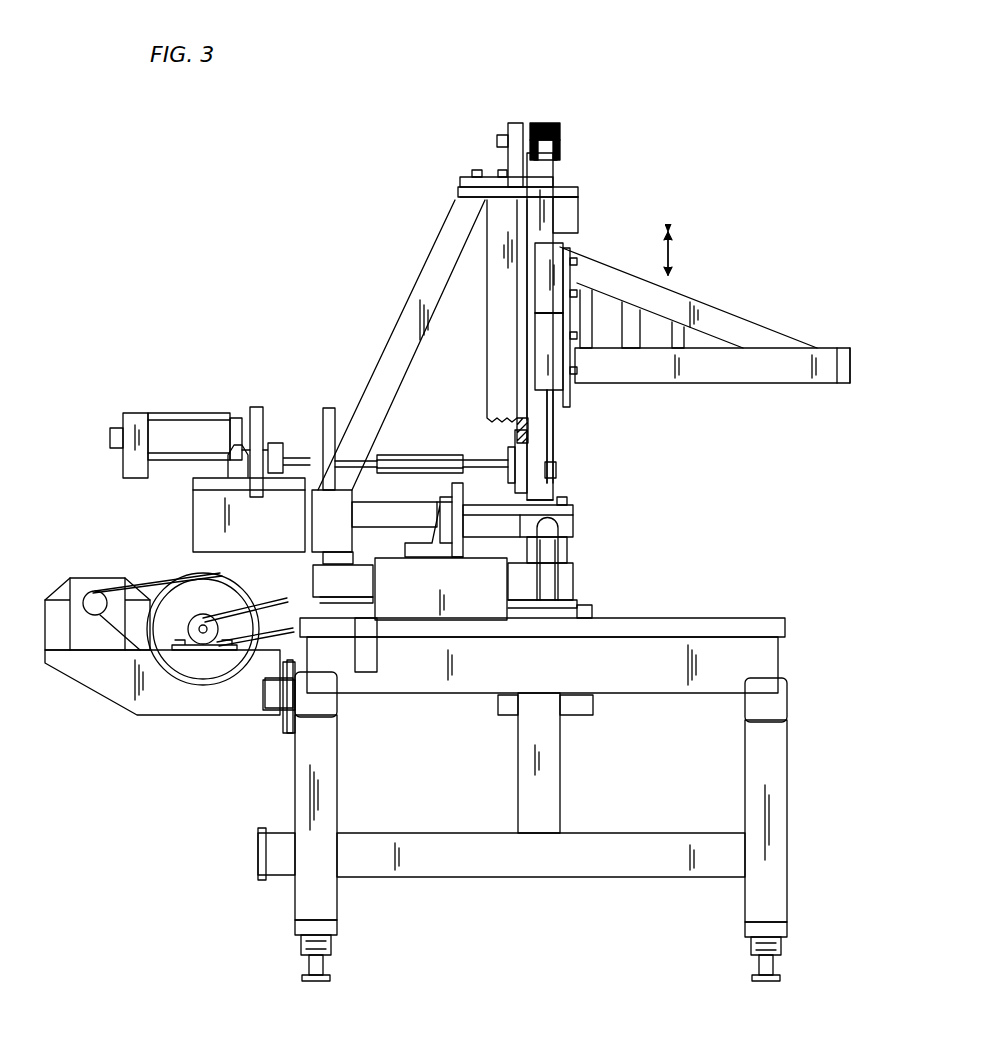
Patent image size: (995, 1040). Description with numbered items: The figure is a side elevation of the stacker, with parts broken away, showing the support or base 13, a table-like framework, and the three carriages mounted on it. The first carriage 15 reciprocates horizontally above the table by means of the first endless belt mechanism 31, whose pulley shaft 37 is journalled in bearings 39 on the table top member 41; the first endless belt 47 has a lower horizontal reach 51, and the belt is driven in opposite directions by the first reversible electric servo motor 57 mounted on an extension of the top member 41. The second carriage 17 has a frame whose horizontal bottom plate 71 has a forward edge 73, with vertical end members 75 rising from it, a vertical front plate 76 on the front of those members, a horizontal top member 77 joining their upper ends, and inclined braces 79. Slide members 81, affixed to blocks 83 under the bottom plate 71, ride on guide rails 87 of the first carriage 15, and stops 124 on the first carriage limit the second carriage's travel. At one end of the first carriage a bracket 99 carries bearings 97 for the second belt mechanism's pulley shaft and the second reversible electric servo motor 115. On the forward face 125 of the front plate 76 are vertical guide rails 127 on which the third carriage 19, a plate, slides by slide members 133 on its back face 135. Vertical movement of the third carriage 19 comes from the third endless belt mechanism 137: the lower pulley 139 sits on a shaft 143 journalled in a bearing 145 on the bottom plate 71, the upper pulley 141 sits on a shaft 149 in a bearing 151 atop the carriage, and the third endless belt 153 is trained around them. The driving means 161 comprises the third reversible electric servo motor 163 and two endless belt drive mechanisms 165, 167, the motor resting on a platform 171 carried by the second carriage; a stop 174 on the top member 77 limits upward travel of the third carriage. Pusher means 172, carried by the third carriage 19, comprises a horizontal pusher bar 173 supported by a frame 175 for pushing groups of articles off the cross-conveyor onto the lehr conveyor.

The support or base 13 is at (826, 790).
The first carriage 15 is at (578, 590).
The second carriage 17 is at (588, 178).
The third carriage 19 is at (578, 400).
The first endless belt mechanism 31 is at (100, 576).
The shaft 37 is at (202, 633).
The bearings 39 is at (227, 650).
The top member 41 is at (102, 700).
The first endless belt 47 is at (260, 603).
The lower horizontal reach 51 is at (90, 600).
The first reversible electric servo motor 57 is at (95, 632).
The bottom plate 71 is at (543, 502).
The forward edge 73 is at (575, 510).
The vertical end members 75 is at (490, 382).
The vertical front plate 76 is at (517, 432).
The top member 77 is at (590, 197).
The inclined braces 79 is at (437, 262).
The slide members 81 is at (313, 537).
The blocks 83 is at (573, 545).
The guide rails 87 is at (337, 560).
The bearings 97 is at (490, 557).
The bracket 99 is at (487, 622).
The second reversible electric servo motor 115 is at (390, 530).
The stops 124 is at (560, 527).
The forward face 125 is at (552, 440).
The guide rails 127 is at (543, 173).
The slide members 133 is at (543, 325).
The back face 135 is at (563, 345).
The third endless belt mechanism 137 is at (547, 115).
The lower pulley 139 is at (550, 472).
The upper pulley 141 is at (540, 125).
The shaft 143 is at (413, 453).
The bearing 145 is at (340, 410).
The shaft 149 is at (497, 140).
The bearing 151 is at (512, 122).
The third endless belt 153 is at (557, 237).
The means for driving the third endless belt 161 is at (133, 408).
The third reversible electric servo motor 163 is at (202, 413).
The endless belt drive mechanism 165 is at (167, 547).
The endless belt drive mechanism 167 is at (277, 433).
The platform 171 is at (193, 480).
The pusher means 172 is at (843, 390).
The pusher bar 173 is at (850, 353).
The stop 174 is at (573, 220).
The frame 175 is at (718, 384).